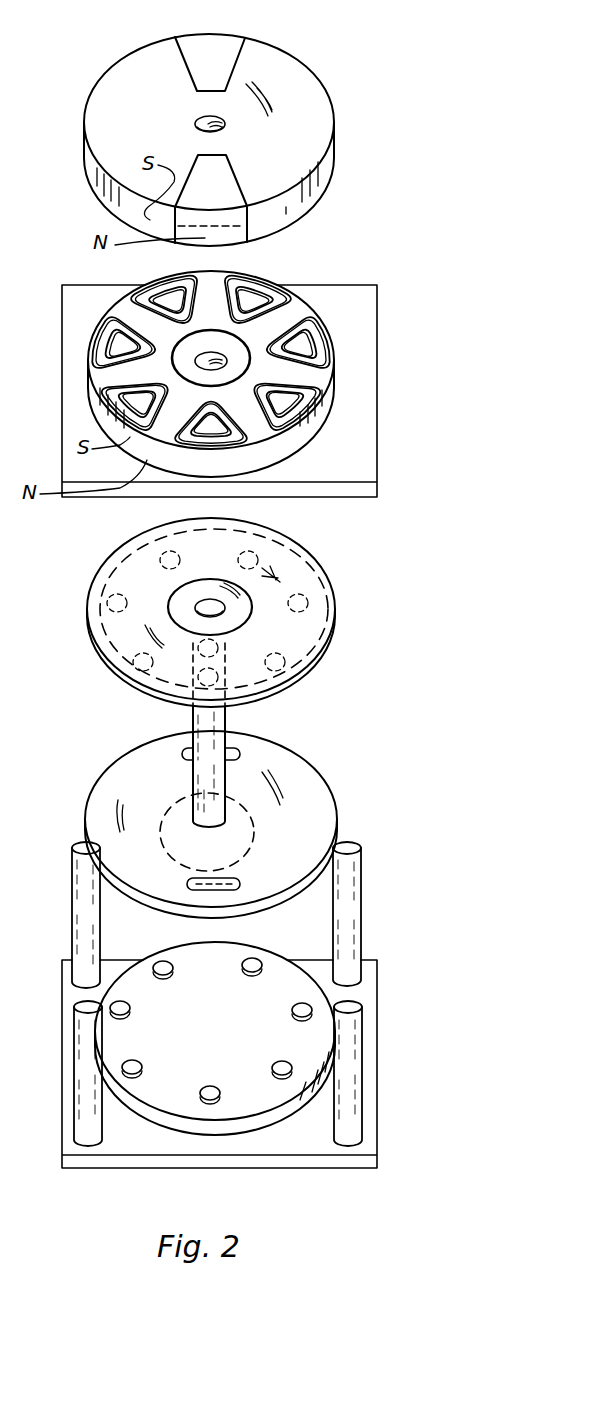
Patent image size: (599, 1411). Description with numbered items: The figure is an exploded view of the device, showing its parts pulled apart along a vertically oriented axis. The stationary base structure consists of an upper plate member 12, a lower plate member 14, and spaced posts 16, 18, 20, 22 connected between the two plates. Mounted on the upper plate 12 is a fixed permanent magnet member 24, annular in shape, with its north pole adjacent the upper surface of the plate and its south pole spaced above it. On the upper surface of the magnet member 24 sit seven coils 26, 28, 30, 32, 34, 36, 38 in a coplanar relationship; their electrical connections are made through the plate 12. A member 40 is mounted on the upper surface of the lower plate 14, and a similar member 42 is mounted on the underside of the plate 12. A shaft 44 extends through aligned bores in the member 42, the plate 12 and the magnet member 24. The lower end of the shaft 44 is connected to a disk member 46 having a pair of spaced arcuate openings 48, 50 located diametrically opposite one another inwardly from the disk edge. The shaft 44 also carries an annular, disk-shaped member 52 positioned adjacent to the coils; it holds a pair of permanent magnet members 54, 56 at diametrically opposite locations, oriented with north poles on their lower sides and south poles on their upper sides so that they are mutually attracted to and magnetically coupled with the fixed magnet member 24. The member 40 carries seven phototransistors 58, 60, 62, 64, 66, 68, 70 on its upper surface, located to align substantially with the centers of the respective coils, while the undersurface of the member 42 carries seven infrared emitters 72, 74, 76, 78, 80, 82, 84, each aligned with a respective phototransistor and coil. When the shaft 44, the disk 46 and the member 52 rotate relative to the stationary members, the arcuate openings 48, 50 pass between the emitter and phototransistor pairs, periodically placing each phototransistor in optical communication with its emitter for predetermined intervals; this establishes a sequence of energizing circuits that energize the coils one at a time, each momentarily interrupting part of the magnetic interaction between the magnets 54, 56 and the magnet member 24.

The upper plate member 12 is at (377, 483).
The lower plate member 14 is at (355, 1162).
The post 16 is at (352, 1047).
The post 18 is at (87, 1050).
The post 20 is at (80, 875).
The post 22 is at (352, 898).
The fixed permanent magnet member 24 is at (322, 423).
The coil 26 is at (212, 433).
The coil 28 is at (112, 393).
The coil 30 is at (108, 332).
The coil 32 is at (205, 280).
The coil 34 is at (262, 288).
The coil 36 is at (318, 336).
The coil 38 is at (308, 400).
The lower plate member 40 is at (267, 1118).
The member 42 is at (303, 650).
The shaft 44 is at (215, 722).
The disk member 46 is at (305, 790).
The arcuate opening 48 is at (233, 878).
The arcuate opening 50 is at (185, 748).
The annular member 52 is at (320, 137).
The permanent magnet member 54 is at (220, 192).
The permanent magnet member 56 is at (228, 53).
The phototransistor 58 is at (208, 1090).
The phototransistor 60 is at (130, 1058).
The phototransistor 62 is at (115, 1002).
The phototransistor 64 is at (160, 963).
The phototransistor 66 is at (253, 960).
The phototransistor 68 is at (300, 1003).
The phototransistor 70 is at (288, 1060).
The infrared emitter 72 is at (193, 718).
The infrared emitter 74 is at (127, 690).
The infrared emitter 76 is at (100, 617).
The infrared emitter 78 is at (140, 558).
The infrared emitter 80 is at (300, 560).
The infrared emitter 82 is at (337, 610).
The infrared emitter 84 is at (297, 685).